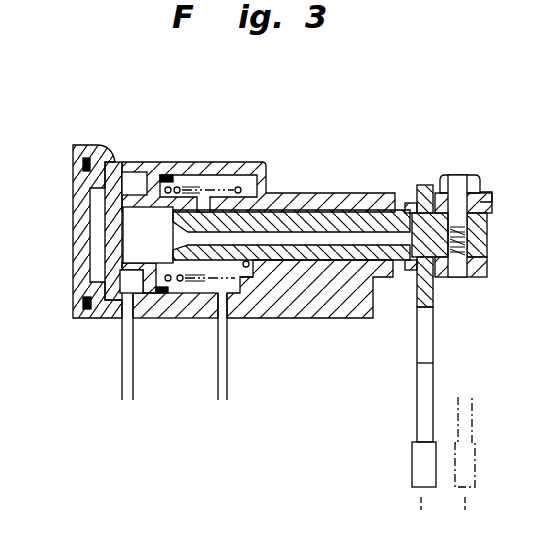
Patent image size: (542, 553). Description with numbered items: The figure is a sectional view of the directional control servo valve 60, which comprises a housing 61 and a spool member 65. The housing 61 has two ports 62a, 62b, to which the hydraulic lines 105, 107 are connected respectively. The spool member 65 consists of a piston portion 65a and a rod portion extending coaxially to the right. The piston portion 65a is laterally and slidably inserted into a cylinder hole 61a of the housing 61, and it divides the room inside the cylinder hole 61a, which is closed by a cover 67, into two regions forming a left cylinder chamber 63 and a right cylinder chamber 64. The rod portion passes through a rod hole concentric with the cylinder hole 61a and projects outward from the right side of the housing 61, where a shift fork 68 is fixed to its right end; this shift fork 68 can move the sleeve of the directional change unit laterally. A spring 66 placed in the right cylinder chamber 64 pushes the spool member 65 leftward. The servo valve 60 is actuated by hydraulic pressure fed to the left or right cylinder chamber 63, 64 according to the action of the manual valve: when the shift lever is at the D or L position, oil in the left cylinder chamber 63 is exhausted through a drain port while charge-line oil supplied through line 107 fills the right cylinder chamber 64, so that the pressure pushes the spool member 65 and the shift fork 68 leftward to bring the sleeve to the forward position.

The directional control servo valve 60 is at (322, 135).
The housing 61 is at (210, 198).
The cylinder hole 61a is at (180, 172).
The port 62a is at (128, 321).
The port 62b is at (218, 323).
The left cylinder chamber 63 is at (133, 183).
The right cylinder chamber 64 is at (258, 160).
The spool member 65 is at (232, 180).
The piston portion 65a is at (180, 290).
The spring 66 is at (233, 280).
The cover 67 is at (102, 237).
The shift fork 68 is at (427, 382).
The hydraulic line 105 is at (123, 385).
The hydraulic line 107 is at (222, 388).